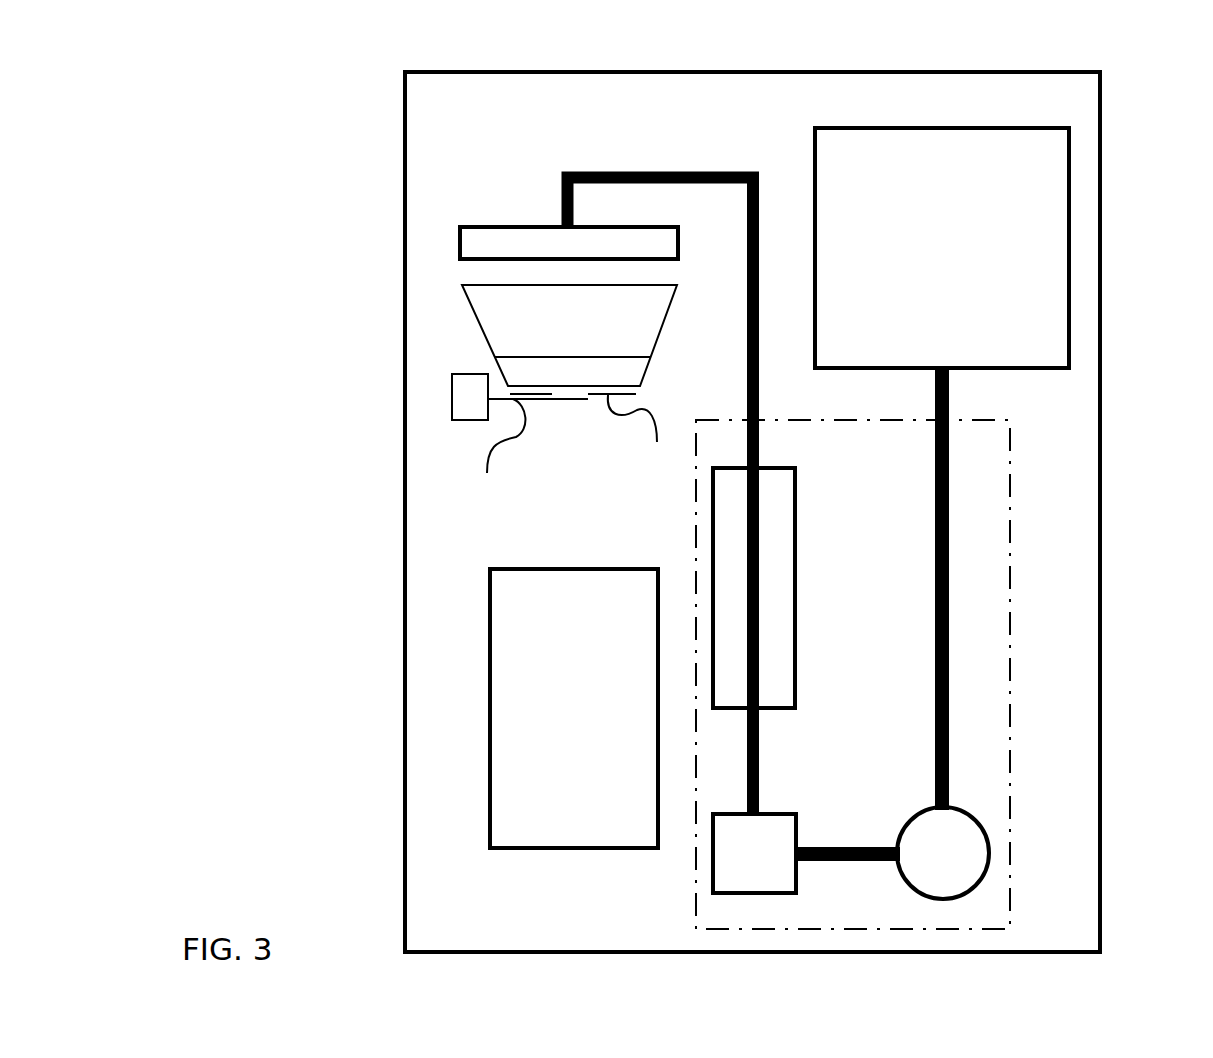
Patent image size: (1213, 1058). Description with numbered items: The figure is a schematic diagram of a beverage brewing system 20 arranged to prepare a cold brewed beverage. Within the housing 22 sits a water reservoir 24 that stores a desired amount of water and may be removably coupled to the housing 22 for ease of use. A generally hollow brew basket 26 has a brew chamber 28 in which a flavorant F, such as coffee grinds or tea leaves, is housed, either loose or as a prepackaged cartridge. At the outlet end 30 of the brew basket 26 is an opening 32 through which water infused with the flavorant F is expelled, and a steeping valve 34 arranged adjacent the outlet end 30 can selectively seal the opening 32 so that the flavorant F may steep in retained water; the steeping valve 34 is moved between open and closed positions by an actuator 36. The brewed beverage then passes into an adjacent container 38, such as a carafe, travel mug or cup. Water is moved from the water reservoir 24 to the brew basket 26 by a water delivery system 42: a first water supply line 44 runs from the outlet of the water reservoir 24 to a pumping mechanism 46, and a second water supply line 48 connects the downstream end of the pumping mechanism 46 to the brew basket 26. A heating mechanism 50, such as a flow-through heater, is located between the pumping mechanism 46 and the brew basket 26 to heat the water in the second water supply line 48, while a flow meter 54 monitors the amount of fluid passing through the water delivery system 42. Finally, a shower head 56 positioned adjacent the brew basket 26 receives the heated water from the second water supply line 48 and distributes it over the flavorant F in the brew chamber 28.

The beverage brewing system 20 is at (245, 112).
The housing 22 is at (1103, 140).
The water reservoir 24 is at (942, 248).
The brew basket 26 is at (467, 290).
The brew chamber 28 is at (508, 322).
The flavorant F is at (528, 368).
The outlet end 30 is at (643, 435).
The opening 32 is at (571, 393).
The steeping valve 34 is at (503, 453).
The actuator 36 is at (473, 397).
The container 38 is at (574, 708).
The water delivery system 42 is at (1022, 590).
The first water supply line 44 is at (949, 480).
The pumping mechanism 46 is at (754, 853).
The second water supply line 48 is at (760, 753).
The heating mechanism 50 is at (767, 591).
The flow meter 54 is at (892, 853).
The shower head 56 is at (532, 243).